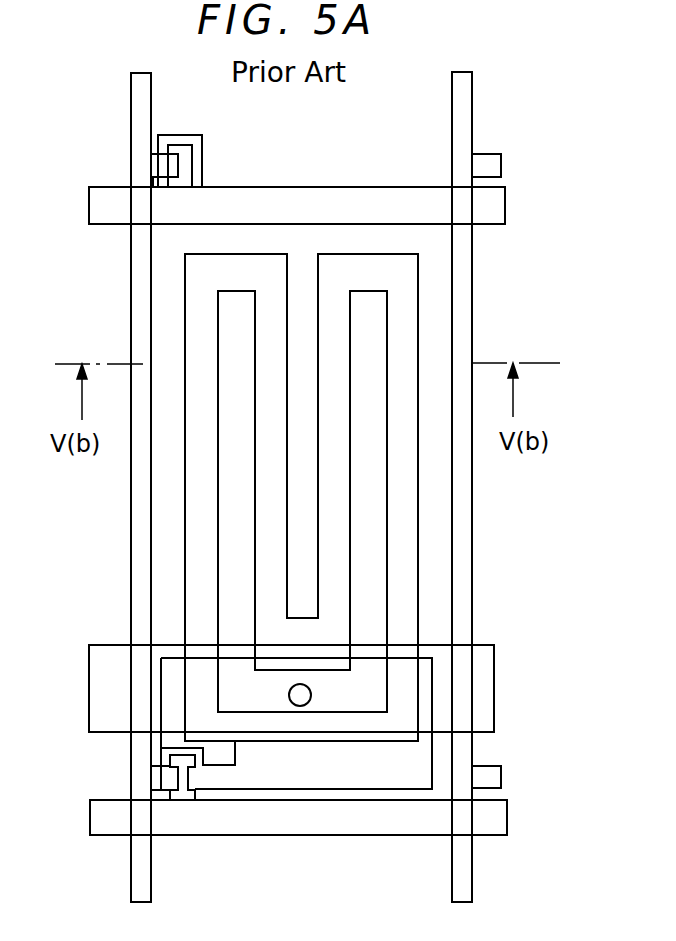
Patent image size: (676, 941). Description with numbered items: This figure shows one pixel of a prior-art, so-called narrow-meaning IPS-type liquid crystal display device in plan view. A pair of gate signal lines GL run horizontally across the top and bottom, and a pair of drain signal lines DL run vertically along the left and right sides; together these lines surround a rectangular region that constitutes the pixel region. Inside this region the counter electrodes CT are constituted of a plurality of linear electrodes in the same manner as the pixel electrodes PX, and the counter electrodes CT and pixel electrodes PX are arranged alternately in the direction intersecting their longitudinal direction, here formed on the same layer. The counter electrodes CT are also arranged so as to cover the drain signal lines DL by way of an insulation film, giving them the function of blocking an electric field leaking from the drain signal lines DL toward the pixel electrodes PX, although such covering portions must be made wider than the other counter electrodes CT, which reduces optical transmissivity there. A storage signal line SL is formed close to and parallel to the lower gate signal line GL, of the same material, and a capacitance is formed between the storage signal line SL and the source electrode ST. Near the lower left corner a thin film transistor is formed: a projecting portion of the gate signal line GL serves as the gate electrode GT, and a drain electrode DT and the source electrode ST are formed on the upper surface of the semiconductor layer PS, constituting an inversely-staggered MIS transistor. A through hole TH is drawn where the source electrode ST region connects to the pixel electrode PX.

The gate signal line GL is at (337, 198).
The drain signal line DL is at (131, 277).
The counter electrode CT is at (287, 490).
The pixel electrode PX is at (256, 578).
The storage signal line SL is at (480, 670).
The through hole TH is at (311, 697).
The gate electrode GT is at (174, 750).
The drain electrode DT is at (157, 757).
The source electrode ST is at (300, 790).
The semiconductor layer PS is at (193, 800).